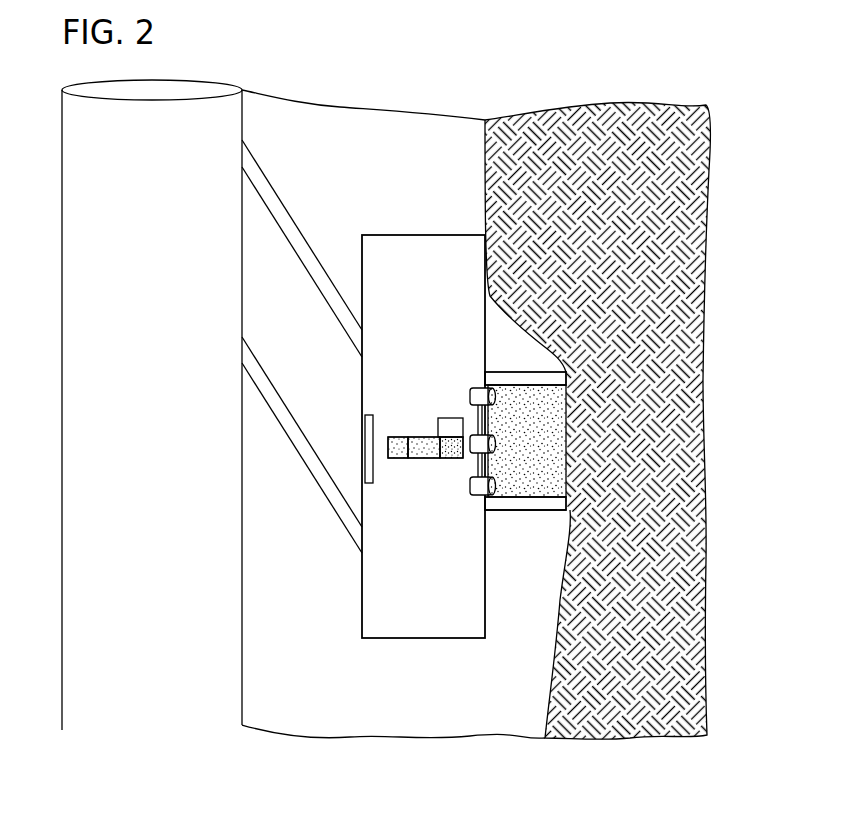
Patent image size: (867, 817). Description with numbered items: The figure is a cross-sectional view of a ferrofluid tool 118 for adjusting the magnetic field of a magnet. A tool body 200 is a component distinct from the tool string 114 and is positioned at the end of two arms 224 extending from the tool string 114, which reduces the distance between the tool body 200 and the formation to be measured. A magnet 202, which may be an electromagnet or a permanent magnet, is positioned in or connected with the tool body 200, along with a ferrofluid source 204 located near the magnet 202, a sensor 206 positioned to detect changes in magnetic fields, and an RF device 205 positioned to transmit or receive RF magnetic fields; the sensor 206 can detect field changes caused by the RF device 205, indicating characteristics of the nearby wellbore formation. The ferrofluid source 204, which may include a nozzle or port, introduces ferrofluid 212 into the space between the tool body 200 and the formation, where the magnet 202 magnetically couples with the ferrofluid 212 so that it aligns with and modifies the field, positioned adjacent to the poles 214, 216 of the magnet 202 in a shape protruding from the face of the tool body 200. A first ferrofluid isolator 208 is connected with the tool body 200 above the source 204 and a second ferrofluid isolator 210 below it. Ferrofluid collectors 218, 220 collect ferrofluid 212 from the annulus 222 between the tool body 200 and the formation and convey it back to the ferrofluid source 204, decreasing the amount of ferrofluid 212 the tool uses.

The tool string 114 is at (105, 135).
The ferrofluid tool 118 is at (417, 118).
The tool body 200 is at (397, 236).
The magnet 202 is at (427, 437).
The ferrofluid source 204 is at (490, 443).
The RF device 205 is at (366, 420).
The sensor 206 is at (449, 419).
The first ferrofluid isolator 208 is at (551, 378).
The second ferrofluid isolator 210 is at (562, 512).
The ferrofluid 212 is at (546, 492).
The pole 214 is at (388, 448).
The pole 216 is at (467, 460).
The ferrofluid collector 218 is at (473, 392).
The ferrofluid collector 220 is at (471, 484).
The annulus 222 is at (512, 640).
The arms 224 is at (262, 172).